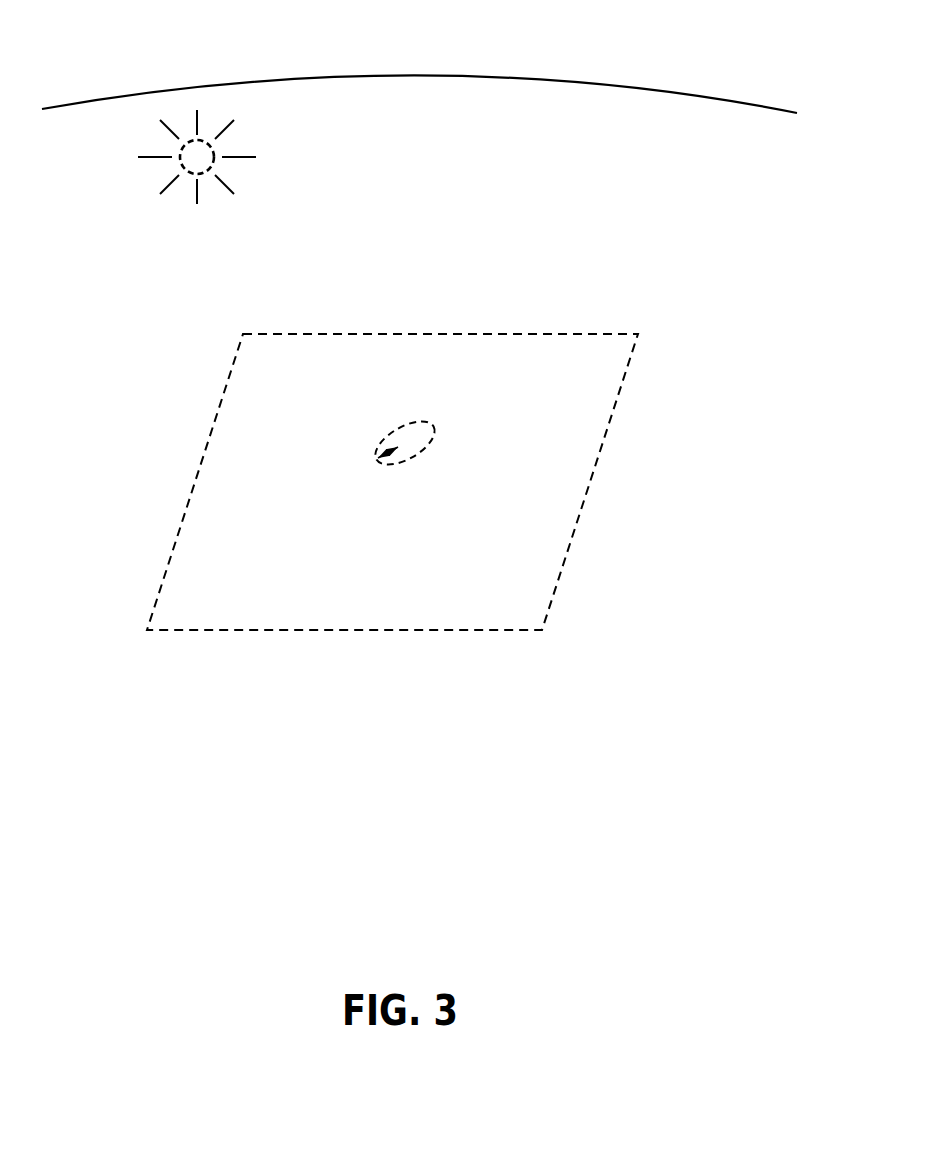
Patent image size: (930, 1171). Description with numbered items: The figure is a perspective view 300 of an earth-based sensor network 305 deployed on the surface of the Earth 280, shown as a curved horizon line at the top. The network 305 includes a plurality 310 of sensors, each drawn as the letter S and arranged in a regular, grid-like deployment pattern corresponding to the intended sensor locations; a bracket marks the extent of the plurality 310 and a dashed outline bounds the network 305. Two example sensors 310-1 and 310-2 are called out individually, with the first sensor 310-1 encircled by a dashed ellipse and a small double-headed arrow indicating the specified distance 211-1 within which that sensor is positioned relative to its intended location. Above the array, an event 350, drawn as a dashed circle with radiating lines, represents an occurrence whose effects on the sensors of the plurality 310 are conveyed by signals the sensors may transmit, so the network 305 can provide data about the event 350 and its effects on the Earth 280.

The perspective view 300 is at (196, 63).
The Earth 280 is at (617, 87).
The event 350 is at (172, 170).
The earth-based sensor network 305 is at (272, 333).
The plurality of sensors 310 is at (128, 321).
The sensor 310-1 is at (408, 427).
The sensor 310-2 is at (463, 440).
The specified distance 211-1 is at (390, 437).